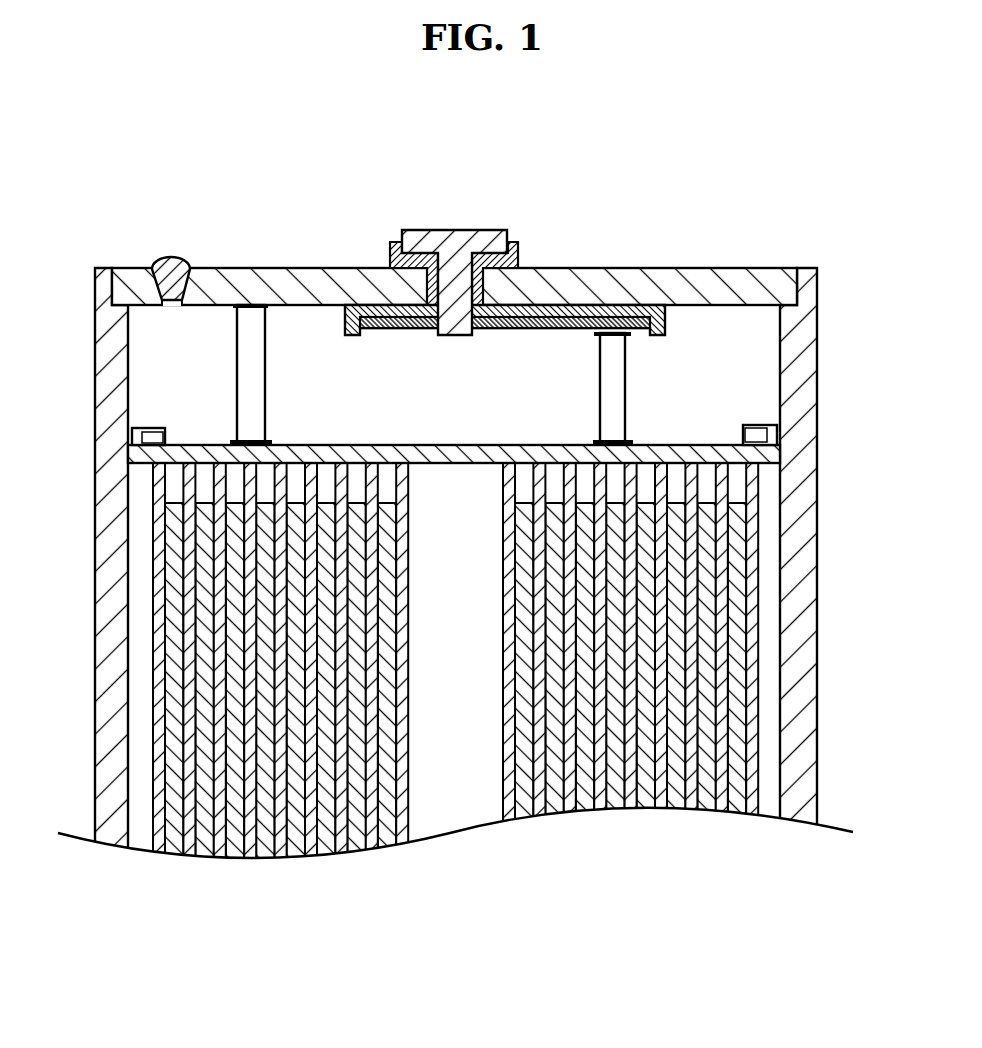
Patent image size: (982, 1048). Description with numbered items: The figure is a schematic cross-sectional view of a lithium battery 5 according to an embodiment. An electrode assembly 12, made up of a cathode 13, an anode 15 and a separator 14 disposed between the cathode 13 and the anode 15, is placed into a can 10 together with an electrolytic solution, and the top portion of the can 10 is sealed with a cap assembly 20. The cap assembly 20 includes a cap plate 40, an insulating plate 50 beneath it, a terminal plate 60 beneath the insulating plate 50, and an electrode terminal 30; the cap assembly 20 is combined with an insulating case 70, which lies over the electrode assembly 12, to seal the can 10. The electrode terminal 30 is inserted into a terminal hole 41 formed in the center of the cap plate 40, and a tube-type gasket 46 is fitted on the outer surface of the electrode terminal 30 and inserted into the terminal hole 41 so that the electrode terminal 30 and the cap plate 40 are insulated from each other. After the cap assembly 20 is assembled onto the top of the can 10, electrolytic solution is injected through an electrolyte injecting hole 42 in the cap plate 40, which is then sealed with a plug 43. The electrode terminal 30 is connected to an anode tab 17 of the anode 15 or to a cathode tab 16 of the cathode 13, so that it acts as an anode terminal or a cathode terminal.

The secondary battery 5 is at (632, 214).
The can 10 is at (805, 690).
The electrode assembly 12 is at (778, 603).
The cathode 13 is at (731, 812).
The separator 14 is at (750, 815).
The anode 15 is at (716, 813).
The cathode tab 16 is at (243, 357).
The anode tab 17 is at (620, 397).
The cap assembly 20 is at (862, 222).
The electrode terminal 30 is at (458, 230).
The cap plate 40 is at (719, 268).
The terminal hole 41 is at (393, 243).
The electrolyte injecting hole 42 is at (160, 290).
The plug 43 is at (172, 257).
The gasket 46 is at (519, 244).
The insulating plate 50 is at (666, 333).
The terminal plate 60 is at (528, 336).
The insulating case 70 is at (200, 445).